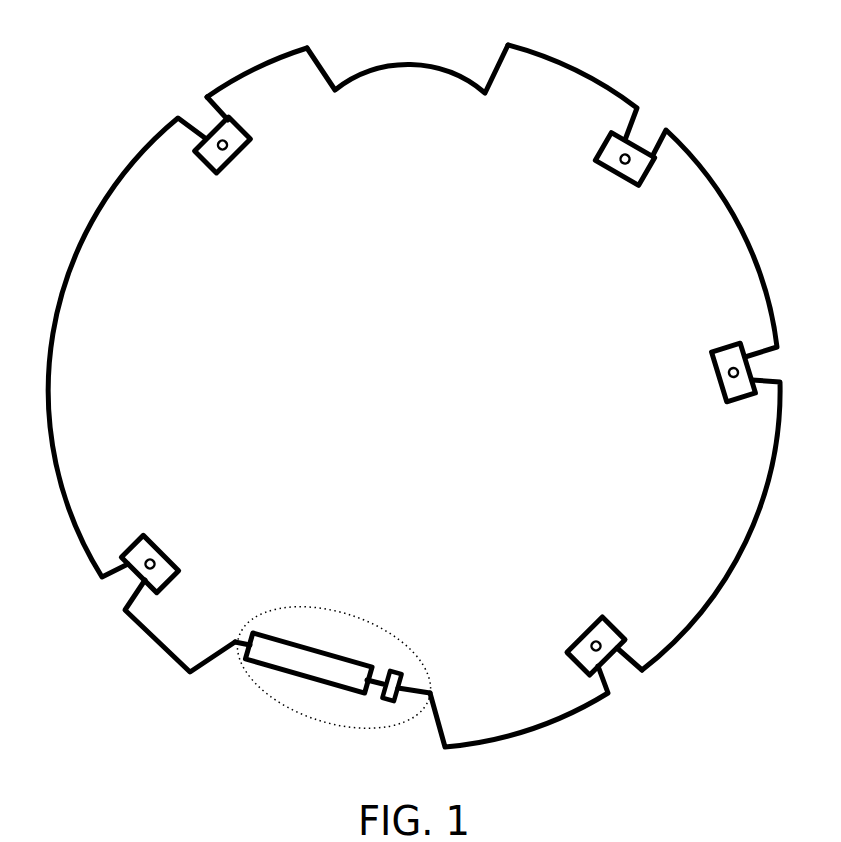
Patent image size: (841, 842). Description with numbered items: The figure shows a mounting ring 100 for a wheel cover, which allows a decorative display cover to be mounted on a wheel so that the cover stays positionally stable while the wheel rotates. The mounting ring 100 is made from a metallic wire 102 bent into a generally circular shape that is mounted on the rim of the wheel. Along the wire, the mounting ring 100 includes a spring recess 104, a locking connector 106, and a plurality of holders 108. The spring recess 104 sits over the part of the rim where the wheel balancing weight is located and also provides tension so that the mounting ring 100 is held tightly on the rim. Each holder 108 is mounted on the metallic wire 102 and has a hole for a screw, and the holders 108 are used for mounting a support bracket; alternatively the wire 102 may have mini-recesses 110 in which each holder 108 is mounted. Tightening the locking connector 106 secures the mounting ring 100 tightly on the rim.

The mounting ring 100 is at (165, 64).
The metallic wire 102 is at (92, 230).
The spring recess 104 is at (380, 67).
The locking connector 106 is at (263, 617).
The holder 108 is at (710, 362).
The mini-recess 110 is at (635, 660).